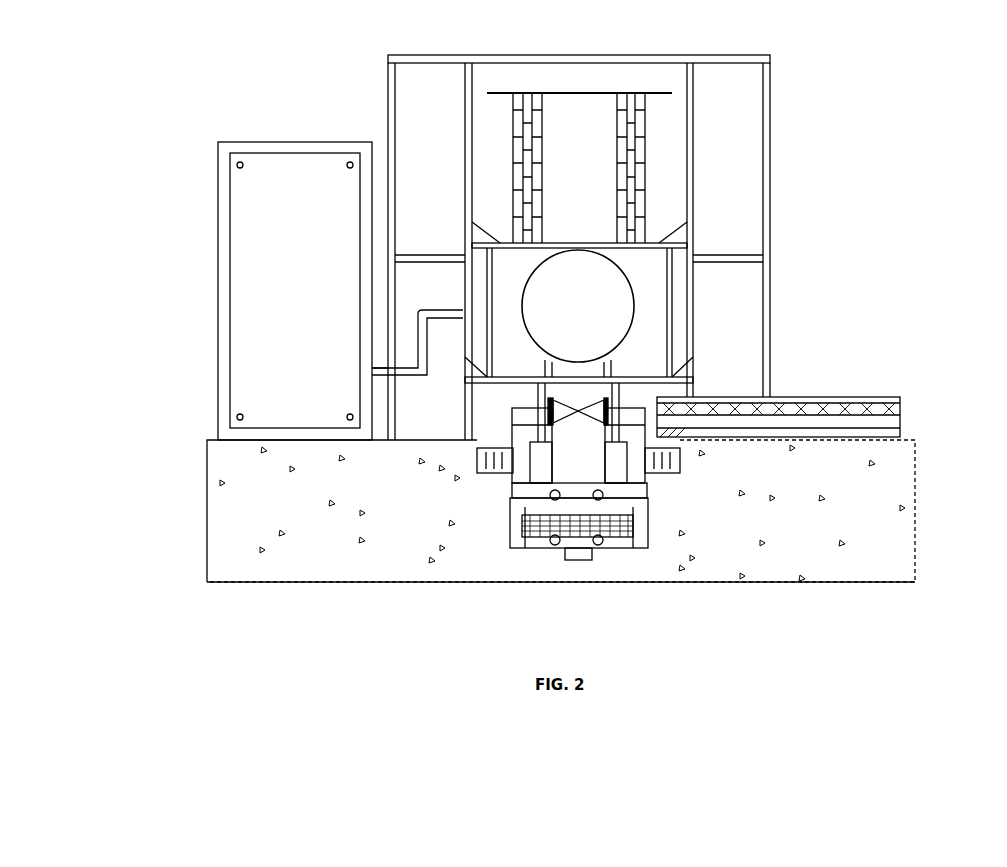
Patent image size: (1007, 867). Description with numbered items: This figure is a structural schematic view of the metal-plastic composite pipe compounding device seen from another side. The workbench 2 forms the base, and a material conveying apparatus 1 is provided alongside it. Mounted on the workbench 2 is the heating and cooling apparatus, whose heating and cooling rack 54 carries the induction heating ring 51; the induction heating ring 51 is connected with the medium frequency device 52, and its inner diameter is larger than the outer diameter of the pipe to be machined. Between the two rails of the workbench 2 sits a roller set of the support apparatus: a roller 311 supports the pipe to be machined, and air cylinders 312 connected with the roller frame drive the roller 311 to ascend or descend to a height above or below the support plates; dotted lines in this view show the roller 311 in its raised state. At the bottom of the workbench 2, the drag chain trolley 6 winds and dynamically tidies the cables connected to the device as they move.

The material conveying apparatus 1 is at (877, 425).
The workbench 2 is at (877, 513).
The drag chain trolley 6 is at (580, 502).
The induction heating ring 51 is at (653, 303).
The medium frequency device 52 is at (260, 260).
The heating and cooling rack 54 is at (740, 333).
The roller 311 is at (537, 412).
The air cylinder 312 is at (541, 453).